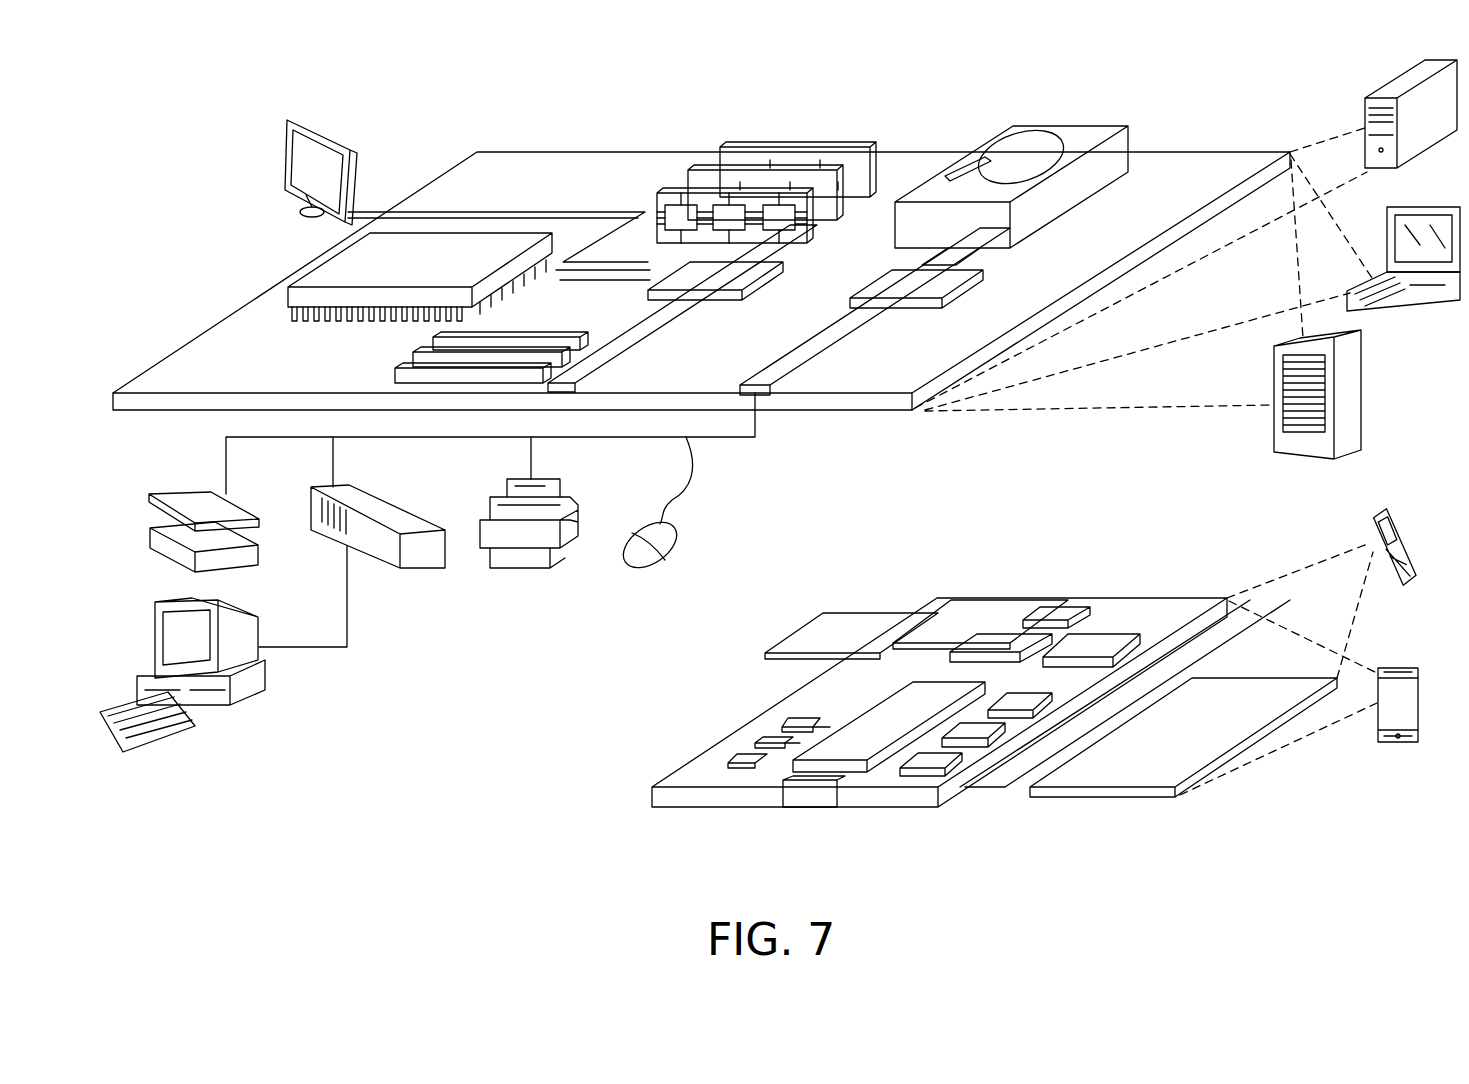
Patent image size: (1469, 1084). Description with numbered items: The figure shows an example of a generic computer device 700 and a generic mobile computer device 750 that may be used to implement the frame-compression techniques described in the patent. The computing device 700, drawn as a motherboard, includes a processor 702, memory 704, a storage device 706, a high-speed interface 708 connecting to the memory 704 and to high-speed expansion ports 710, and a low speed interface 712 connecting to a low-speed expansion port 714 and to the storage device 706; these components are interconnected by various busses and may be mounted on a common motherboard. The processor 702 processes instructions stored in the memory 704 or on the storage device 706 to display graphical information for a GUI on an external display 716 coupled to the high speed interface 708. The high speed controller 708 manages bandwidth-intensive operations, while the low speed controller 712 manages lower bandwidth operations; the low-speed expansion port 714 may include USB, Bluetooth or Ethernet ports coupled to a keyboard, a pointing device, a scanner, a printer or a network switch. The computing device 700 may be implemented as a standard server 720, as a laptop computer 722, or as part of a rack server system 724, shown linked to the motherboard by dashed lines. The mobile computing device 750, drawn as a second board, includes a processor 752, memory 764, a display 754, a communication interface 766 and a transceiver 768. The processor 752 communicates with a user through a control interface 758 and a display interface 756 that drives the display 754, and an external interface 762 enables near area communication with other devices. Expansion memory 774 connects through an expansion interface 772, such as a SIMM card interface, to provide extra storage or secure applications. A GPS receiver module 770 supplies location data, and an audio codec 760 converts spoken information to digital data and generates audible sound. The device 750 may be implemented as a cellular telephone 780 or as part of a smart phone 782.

The computing device 700 is at (426, 93).
The processor 702 is at (313, 266).
The memory 704 is at (800, 146).
The storage device 706 is at (1050, 126).
The high-speed interface 708 is at (728, 272).
The high-speed expansion ports 710 is at (420, 350).
The low speed interface 712 is at (885, 281).
The low-speed expansion port 714 is at (760, 381).
The display 716 is at (287, 118).
The standard server 720 is at (1387, 94).
The laptop computer 722 is at (1447, 204).
The rack server system 724 is at (1362, 400).
The mobile computer device 750 is at (598, 818).
The processor 752 is at (856, 733).
The display 754 is at (1225, 703).
The display interface 756 is at (942, 760).
The control interface 758 is at (988, 732).
The audio codec 760 is at (1027, 697).
The external interface 762 is at (812, 790).
The memory 764 is at (762, 737).
The communication interface 766 is at (1002, 637).
The transceiver 768 is at (1100, 635).
The GPS receiver module 770 is at (1058, 606).
The expansion interface 772 is at (918, 612).
The expansion memory 774 is at (827, 612).
The cellular telephone 780 is at (1385, 520).
The smart phone 782 is at (1390, 668).